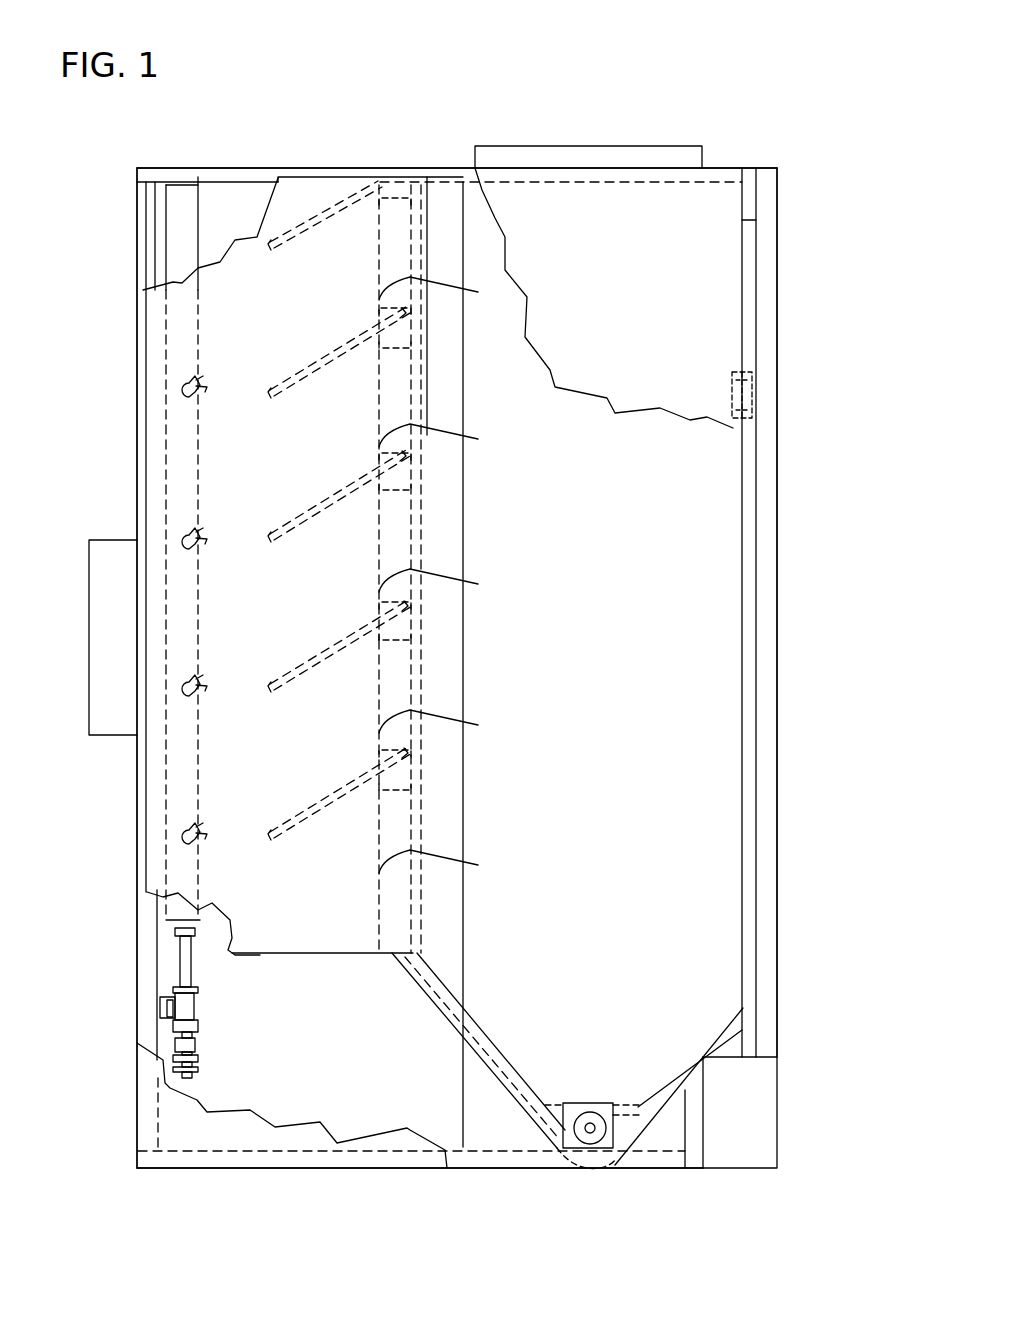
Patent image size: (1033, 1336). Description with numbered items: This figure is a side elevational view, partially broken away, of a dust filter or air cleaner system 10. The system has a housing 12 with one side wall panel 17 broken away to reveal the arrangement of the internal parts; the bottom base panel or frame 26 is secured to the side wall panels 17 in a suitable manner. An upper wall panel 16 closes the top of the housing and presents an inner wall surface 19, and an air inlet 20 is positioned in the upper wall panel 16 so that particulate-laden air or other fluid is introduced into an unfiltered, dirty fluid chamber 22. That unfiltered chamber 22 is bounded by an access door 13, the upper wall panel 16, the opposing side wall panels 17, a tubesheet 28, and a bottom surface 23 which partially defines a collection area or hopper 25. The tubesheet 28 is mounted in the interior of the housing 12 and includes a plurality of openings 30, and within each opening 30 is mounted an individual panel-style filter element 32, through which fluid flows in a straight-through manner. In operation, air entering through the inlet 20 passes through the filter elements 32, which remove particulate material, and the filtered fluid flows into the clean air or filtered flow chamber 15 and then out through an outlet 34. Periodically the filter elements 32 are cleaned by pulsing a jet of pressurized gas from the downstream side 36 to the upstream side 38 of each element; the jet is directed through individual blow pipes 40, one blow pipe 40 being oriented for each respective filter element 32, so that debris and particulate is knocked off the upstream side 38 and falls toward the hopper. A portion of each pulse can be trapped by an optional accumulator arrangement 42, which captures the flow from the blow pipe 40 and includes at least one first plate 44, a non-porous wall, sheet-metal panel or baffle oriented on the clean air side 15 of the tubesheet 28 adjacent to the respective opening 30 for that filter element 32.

The air cleaner system 10 is at (800, 130).
The housing 12 is at (138, 983).
The access door 13 is at (778, 881).
The clean air chamber 15 is at (220, 466).
The upper wall panel 16 is at (725, 168).
The side wall panel 17 is at (182, 1108).
The inner wall surface 19 is at (324, 186).
The air inlet 20 is at (663, 146).
The unfiltered fluid chamber 22 is at (745, 299).
The bottom surface 23 is at (473, 1020).
The hopper 25 is at (703, 1097).
The bottom base panel 26 is at (458, 1169).
The tubesheet 28 is at (380, 311).
The opening 30 is at (445, 576).
The panel-style filter element 32 is at (380, 275).
The outlet 34 is at (110, 655).
The downstream side 36 is at (380, 535).
The upstream side 38 is at (416, 488).
The blow pipe 40 is at (183, 388).
The accumulator arrangement 42 is at (229, 885).
The first plate 44 is at (293, 230).